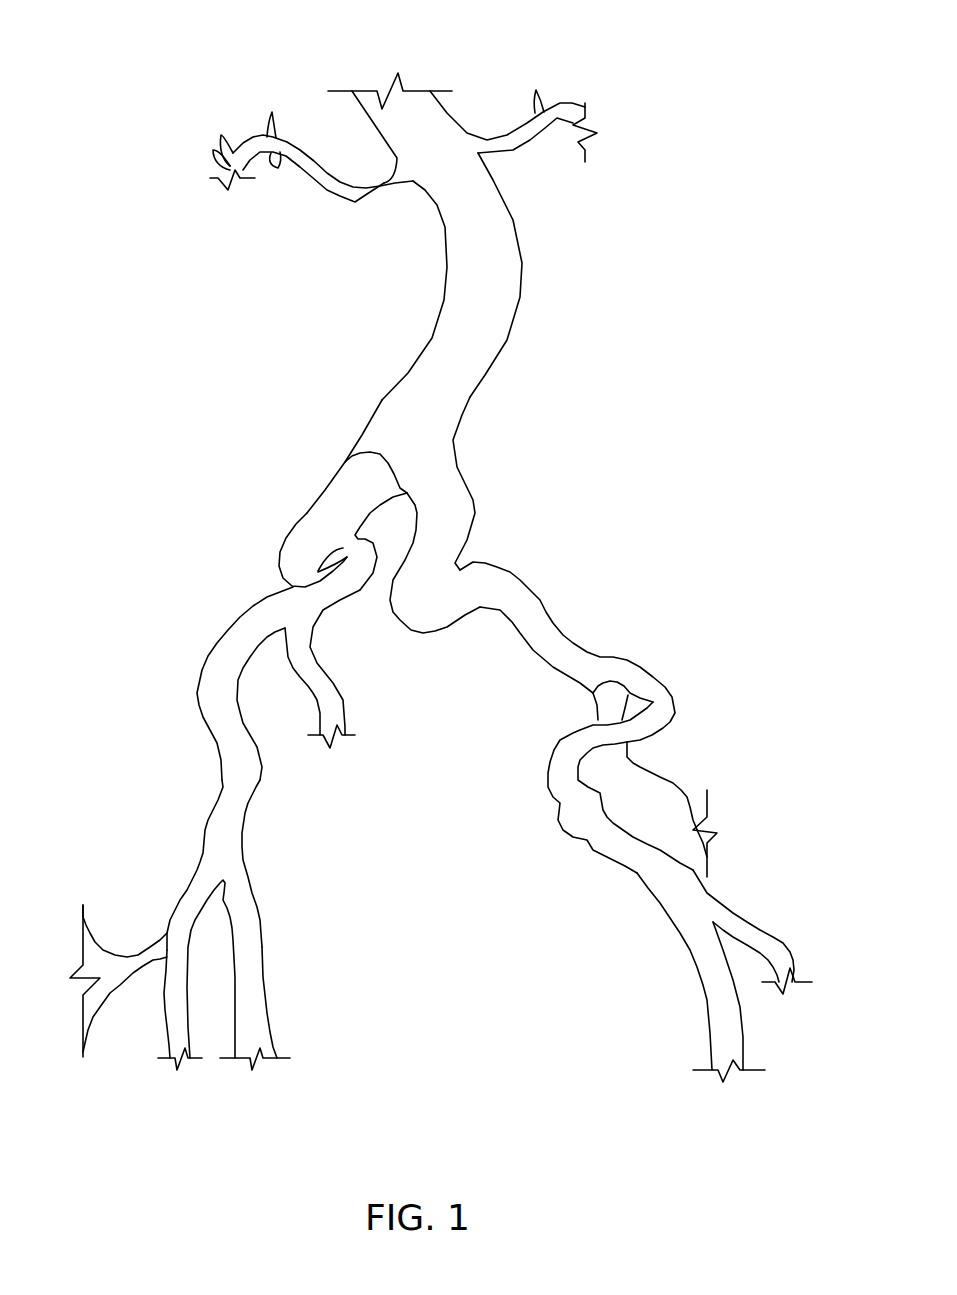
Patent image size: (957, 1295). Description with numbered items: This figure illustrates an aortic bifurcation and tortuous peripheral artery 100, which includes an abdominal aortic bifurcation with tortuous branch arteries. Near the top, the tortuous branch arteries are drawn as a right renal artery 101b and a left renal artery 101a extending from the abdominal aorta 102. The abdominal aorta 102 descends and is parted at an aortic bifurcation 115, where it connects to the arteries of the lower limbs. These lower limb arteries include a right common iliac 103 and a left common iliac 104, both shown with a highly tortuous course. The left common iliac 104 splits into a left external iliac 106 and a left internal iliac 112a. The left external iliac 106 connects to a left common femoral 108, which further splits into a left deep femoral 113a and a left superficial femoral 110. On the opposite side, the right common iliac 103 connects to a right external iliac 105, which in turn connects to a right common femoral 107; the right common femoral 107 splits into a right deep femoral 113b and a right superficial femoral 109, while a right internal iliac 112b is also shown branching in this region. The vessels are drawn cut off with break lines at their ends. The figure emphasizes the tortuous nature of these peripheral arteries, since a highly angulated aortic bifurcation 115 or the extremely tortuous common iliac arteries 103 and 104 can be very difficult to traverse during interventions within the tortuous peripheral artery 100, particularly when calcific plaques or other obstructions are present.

The tortuous peripheral artery 100 is at (409, 64).
The left renal artery 101a is at (515, 152).
The right renal artery 101b is at (353, 203).
The abdominal aorta 102 is at (523, 272).
The right common iliac 103 is at (307, 513).
The left common iliac 104 is at (475, 510).
The right external iliac 105 is at (197, 693).
The left external iliac 106 is at (677, 700).
The right common femoral 107 is at (247, 805).
The left common femoral 108 is at (637, 870).
The right superficial femoral 109 is at (265, 942).
The left superficial femoral 110 is at (703, 988).
The left internal iliac 112a is at (693, 783).
The right internal iliac 112b is at (343, 697).
The left deep femoral 113a is at (733, 912).
The right deep femoral 113b is at (167, 927).
The aortic bifurcation 115 is at (377, 455).